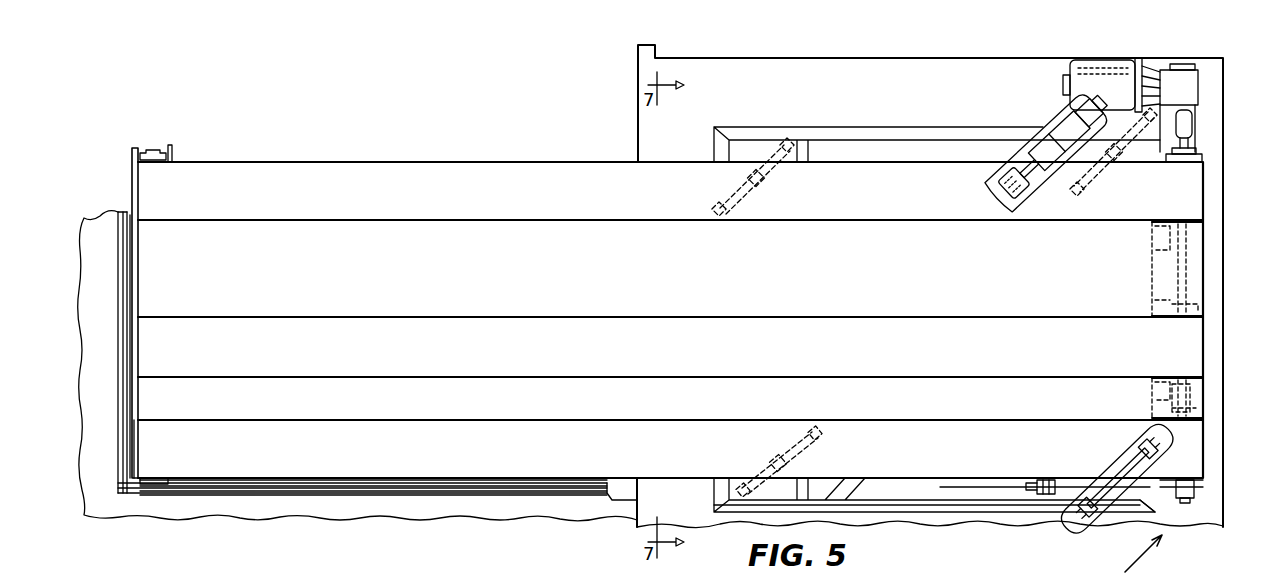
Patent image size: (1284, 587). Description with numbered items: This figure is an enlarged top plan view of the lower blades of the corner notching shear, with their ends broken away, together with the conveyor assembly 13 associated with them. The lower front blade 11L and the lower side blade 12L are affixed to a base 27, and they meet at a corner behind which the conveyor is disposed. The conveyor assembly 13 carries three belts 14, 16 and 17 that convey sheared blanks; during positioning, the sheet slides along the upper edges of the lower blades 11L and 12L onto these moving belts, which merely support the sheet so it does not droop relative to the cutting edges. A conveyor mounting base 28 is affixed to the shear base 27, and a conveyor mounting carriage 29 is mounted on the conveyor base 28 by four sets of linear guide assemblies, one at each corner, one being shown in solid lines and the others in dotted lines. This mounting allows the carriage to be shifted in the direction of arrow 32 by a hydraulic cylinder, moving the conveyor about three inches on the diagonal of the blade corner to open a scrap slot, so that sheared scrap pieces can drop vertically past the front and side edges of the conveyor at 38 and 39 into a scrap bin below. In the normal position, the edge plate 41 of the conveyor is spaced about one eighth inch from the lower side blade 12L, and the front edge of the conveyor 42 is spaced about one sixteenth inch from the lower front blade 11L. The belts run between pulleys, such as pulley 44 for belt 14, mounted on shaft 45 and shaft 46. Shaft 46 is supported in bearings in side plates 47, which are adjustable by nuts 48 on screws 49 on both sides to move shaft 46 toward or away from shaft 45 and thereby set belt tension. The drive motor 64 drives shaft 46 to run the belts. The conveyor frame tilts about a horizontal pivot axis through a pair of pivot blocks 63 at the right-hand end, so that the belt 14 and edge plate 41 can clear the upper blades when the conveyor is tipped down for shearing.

The conveyor assembly 13 is at (395, 572).
The belt 17 is at (1190, 192).
The belt 16 is at (1190, 352).
The belt 14 is at (1190, 452).
The edge plate 41 is at (138, 426).
The side edge of the conveyor 39 is at (131, 398).
The lower side blade 12L is at (125, 456).
The shaft 45 is at (152, 155).
The front edge of the conveyor 38 is at (252, 484).
The base 27 is at (296, 512).
The front edge of the conveyor 42 is at (345, 480).
The lower front blade 11L is at (437, 488).
The conveyor mounting carriage 29 is at (962, 510).
The conveyor mounting base 28 is at (988, 518).
The pivot blocks 63 is at (1160, 241).
The shaft 46 is at (1197, 403).
The drive motor 64 is at (1122, 63).
The side plate 47 is at (1200, 156).
The pulley 44 is at (1195, 487).
The nuts 48 is at (1050, 478).
The screws 49 is at (1030, 488).
The arrow 32 is at (1154, 560).